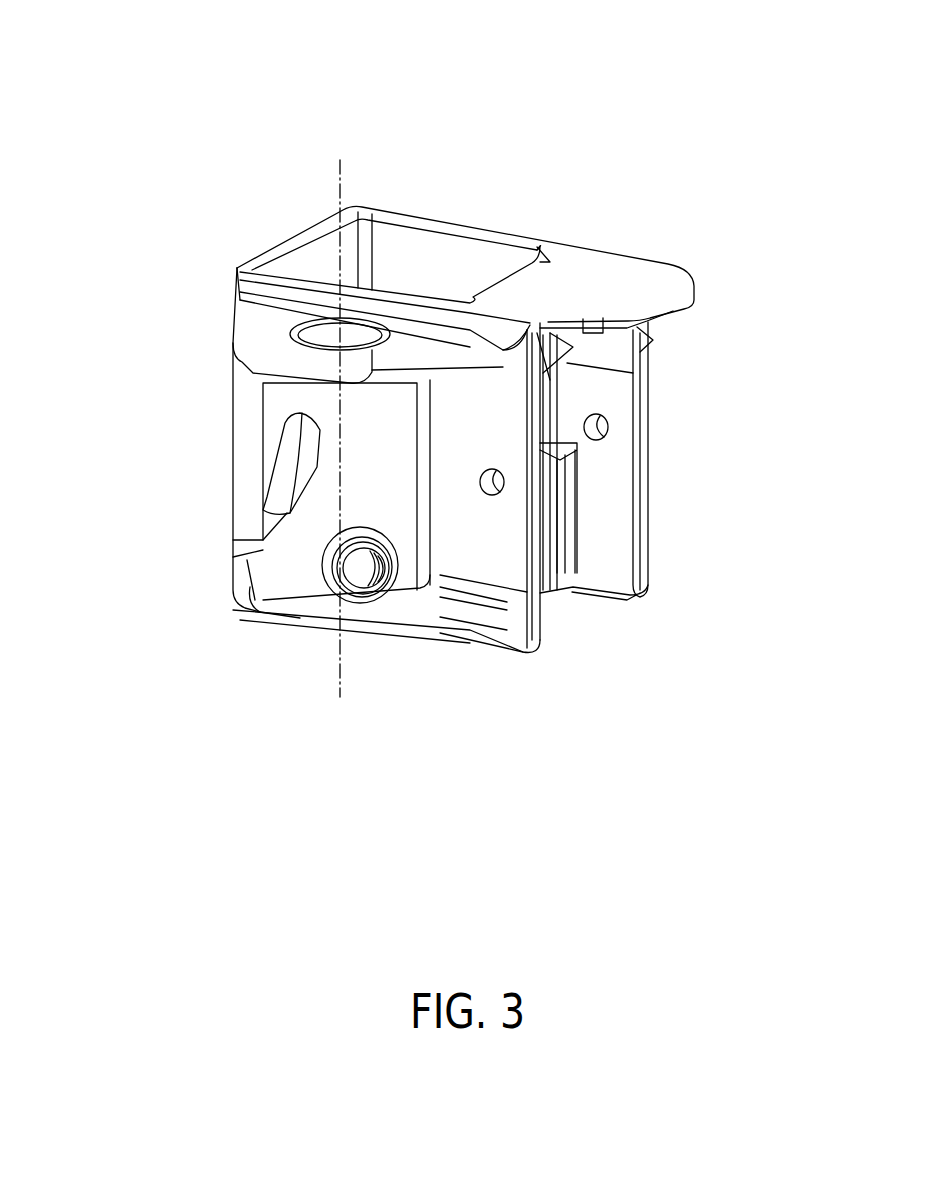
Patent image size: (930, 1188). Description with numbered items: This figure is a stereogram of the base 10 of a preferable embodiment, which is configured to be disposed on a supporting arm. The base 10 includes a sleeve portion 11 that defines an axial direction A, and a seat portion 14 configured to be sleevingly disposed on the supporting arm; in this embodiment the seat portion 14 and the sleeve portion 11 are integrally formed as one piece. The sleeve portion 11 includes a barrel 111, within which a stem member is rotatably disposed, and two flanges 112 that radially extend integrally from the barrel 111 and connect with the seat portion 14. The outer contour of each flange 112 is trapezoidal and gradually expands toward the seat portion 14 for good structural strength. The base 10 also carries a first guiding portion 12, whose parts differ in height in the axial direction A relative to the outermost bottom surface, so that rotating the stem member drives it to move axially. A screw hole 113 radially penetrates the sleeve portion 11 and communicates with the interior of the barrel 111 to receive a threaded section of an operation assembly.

The base 10 is at (703, 266).
The sleeve portion 11 is at (270, 300).
The first guiding portion 12 is at (287, 482).
The seat portion 14 is at (432, 200).
The barrel 111 is at (290, 588).
The flange 112 is at (252, 307).
The screw hole 113 is at (377, 593).
The axial direction A is at (340, 162).